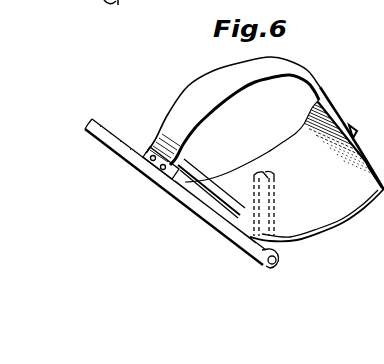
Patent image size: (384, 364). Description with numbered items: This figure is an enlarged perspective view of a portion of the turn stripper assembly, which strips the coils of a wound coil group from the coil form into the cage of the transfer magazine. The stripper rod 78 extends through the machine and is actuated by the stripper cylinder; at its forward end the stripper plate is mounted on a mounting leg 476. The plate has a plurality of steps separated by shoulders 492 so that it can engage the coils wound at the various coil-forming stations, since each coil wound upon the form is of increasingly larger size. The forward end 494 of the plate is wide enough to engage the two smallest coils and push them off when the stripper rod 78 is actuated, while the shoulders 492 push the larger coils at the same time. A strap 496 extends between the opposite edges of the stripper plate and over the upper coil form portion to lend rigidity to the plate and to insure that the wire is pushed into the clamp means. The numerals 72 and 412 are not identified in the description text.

The strap 496 is at (282, 68).
The face shield assembly 72 is at (355, 105).
The clip 412 is at (356, 132).
The forward end 494 is at (340, 229).
The stripper rod 78 is at (178, 205).
The shoulders 492 is at (238, 212).
The mounting leg 476 is at (276, 246).